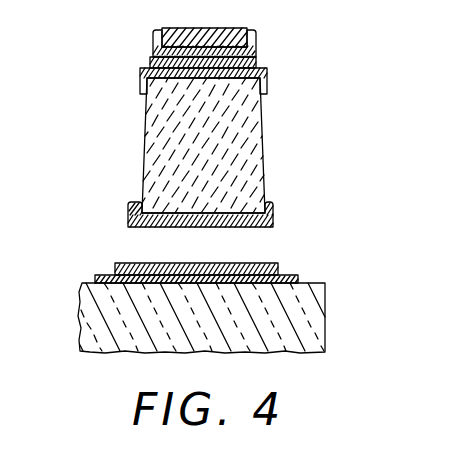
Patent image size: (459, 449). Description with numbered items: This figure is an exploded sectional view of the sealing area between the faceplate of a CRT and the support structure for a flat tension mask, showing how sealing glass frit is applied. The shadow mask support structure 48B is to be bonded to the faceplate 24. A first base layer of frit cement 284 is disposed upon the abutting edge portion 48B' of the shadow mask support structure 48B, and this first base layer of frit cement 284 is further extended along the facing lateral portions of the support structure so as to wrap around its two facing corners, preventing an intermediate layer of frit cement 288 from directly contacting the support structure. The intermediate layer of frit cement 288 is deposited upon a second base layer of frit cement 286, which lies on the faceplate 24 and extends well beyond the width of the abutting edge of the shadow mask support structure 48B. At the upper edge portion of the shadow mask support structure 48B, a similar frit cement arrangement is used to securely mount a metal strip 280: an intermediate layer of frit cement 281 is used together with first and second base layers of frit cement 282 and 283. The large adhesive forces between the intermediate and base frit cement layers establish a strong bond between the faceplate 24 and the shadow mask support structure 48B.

The faceplate 24 is at (79, 320).
The shadow mask support structure 48B is at (157, 145).
The abutting edge portion 48B' is at (164, 224).
The metal strip 280 is at (247, 27).
The intermediate layer of frit cement 281 is at (257, 62).
The first base layer of frit cement 282 is at (140, 85).
The second base layer of frit cement 283 is at (153, 38).
The first base layer of frit cement 284 is at (274, 217).
The second base layer of frit cement 286 is at (298, 282).
The intermediate layer of frit cement 288 is at (260, 263).